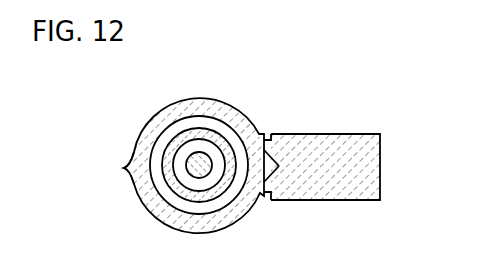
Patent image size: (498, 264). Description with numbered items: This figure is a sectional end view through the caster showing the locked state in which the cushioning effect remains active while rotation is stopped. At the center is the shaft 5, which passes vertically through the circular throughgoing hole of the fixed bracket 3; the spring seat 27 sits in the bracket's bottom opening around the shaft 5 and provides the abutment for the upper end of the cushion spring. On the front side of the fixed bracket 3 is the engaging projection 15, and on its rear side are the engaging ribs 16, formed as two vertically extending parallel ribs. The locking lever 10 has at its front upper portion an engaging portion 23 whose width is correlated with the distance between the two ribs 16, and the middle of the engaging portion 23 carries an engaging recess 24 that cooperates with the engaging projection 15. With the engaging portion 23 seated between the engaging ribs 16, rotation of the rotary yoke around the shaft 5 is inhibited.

The fixed bracket 3 is at (199, 150).
The shaft 5 is at (232, 107).
The locking lever 10 is at (372, 133).
The engaging projection 15 is at (123, 168).
The engaging ribs 16 is at (265, 137).
The engaging portion 23 is at (272, 183).
The engaging recess 24 is at (277, 160).
The spring seat 27 is at (182, 140).